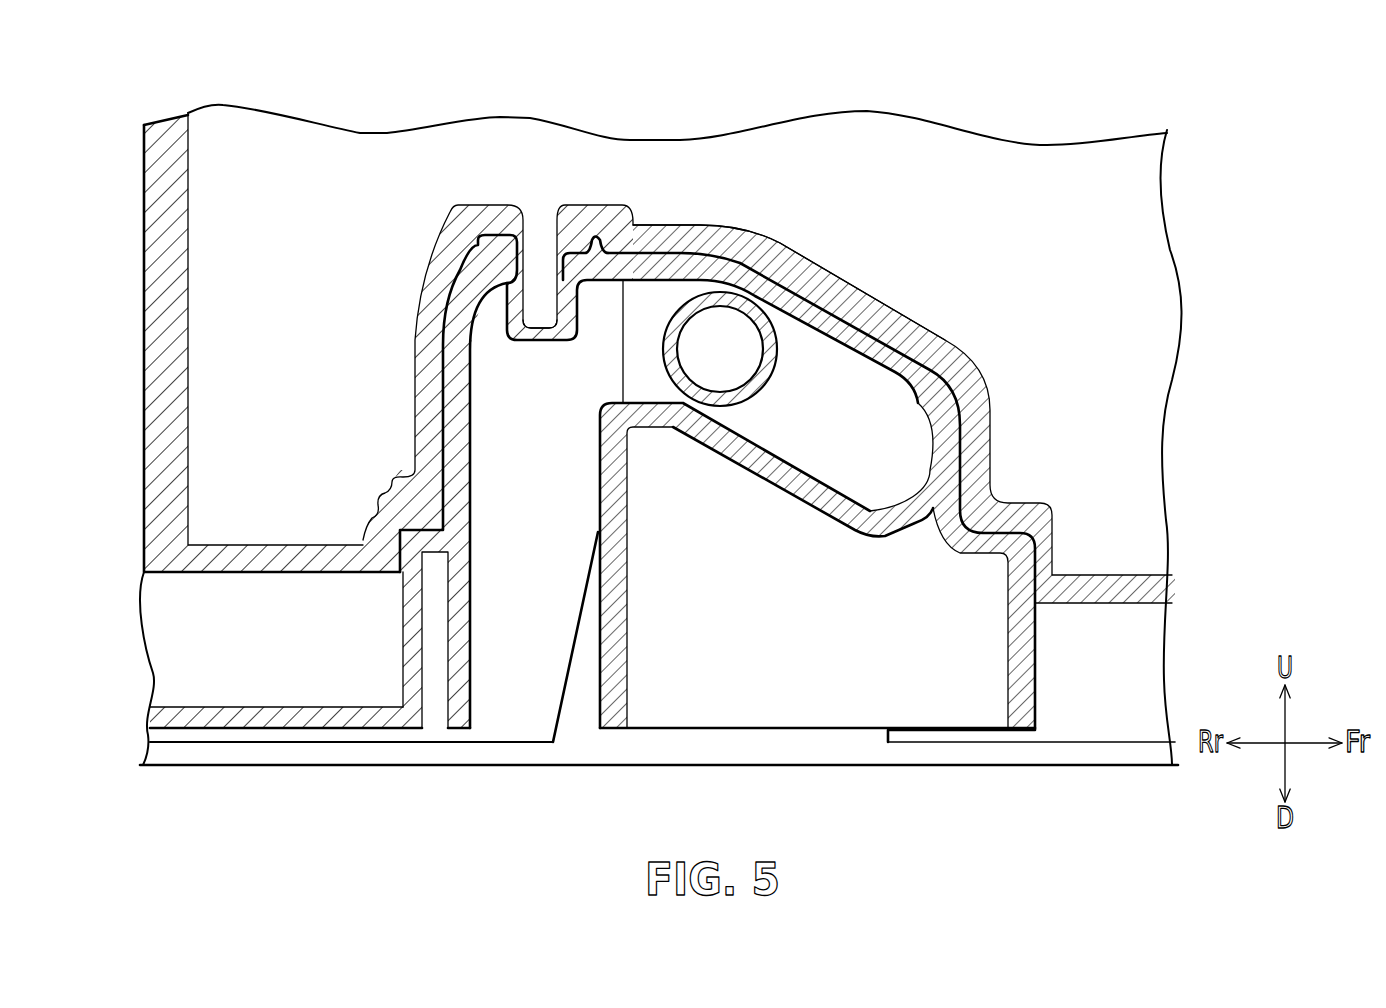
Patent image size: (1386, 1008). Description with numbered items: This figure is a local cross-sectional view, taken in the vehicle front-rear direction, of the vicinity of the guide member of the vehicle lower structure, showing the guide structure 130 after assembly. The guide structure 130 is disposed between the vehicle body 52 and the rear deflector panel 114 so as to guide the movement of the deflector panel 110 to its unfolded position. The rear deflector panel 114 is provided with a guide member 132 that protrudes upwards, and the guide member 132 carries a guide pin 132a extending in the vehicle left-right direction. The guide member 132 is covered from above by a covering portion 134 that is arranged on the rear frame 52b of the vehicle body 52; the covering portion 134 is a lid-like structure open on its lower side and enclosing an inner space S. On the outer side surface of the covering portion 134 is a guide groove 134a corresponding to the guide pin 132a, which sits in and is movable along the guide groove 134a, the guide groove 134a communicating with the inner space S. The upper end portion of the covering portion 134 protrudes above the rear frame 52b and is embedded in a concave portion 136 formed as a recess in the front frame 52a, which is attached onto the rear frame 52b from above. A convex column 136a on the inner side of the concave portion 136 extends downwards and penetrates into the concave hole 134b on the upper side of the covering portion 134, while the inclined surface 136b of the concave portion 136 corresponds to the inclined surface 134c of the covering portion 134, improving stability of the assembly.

The guide structure 130 is at (1276, 140).
The vehicle body 52 is at (386, 440).
The front frame 52a is at (255, 183).
The rear frame 52b is at (316, 678).
The concave portion 136 is at (437, 250).
The convex column 136a is at (540, 267).
The inclined surface 136b is at (917, 363).
The covering portion 134 is at (637, 278).
The guide groove 134a is at (870, 420).
The concave hole 134b is at (577, 263).
The inclined surface 134c is at (697, 247).
The guide member 132 is at (802, 433).
The guide pin 132a is at (735, 357).
The rear deflector panel 114 is at (1085, 745).
The deflector panel 110 is at (659, 794).
The inner space S is at (540, 485).